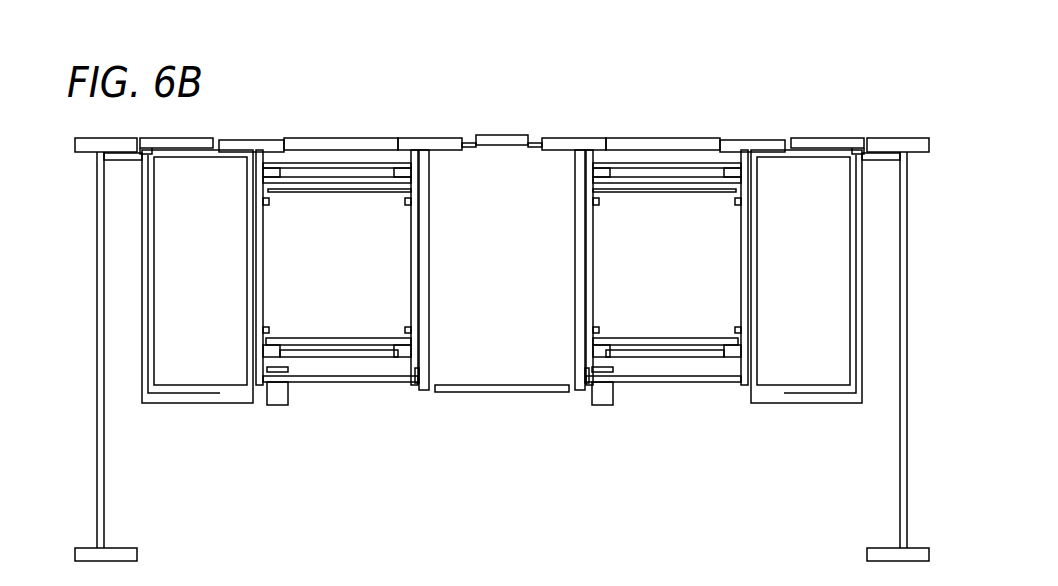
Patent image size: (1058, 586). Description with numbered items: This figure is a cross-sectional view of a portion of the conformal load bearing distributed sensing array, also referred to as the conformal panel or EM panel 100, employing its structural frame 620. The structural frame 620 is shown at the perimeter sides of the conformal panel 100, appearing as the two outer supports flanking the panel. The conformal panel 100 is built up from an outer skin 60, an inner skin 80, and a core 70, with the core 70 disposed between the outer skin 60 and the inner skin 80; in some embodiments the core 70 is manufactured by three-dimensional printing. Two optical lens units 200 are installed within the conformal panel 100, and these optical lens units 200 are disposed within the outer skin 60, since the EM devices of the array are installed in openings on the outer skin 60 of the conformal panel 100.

The conformal panel 100 is at (313, 88).
The optical lens units 200 is at (348, 230).
The outer skin 60 is at (501, 133).
The core 70 is at (460, 360).
The inner skin 80 is at (527, 390).
The structural frame 620 is at (98, 210).